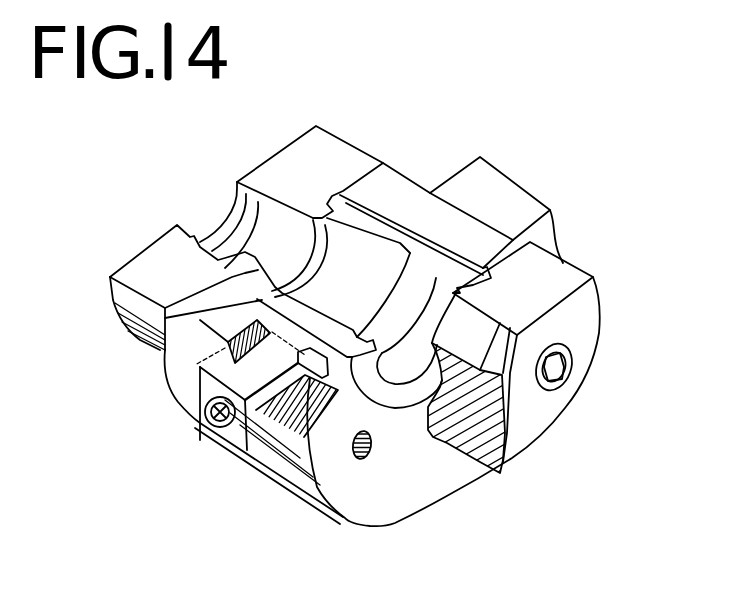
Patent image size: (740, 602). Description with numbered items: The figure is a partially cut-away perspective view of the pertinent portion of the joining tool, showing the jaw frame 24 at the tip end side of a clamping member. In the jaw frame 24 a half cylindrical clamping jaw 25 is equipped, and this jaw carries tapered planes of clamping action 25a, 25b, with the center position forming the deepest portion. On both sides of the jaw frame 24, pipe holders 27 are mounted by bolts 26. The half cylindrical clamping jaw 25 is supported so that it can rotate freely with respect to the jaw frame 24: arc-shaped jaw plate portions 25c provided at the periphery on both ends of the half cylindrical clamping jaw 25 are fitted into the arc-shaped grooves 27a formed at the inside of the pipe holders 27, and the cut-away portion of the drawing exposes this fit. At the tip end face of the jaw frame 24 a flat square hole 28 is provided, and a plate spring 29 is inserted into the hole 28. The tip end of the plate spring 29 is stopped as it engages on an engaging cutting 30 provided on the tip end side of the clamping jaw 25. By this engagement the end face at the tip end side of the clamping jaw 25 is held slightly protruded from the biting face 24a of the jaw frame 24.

The jaw frame 24 is at (400, 507).
The biting face 24a is at (210, 308).
The half cylindrical clamping jaw 25 is at (348, 218).
The tapered plane of clamping action 25a is at (367, 257).
The tapered plane of clamping action 25b is at (420, 262).
The arc-shaped jaw plate portion 25c is at (333, 218).
The bolt 26 is at (573, 357).
The pipe holder 27 is at (143, 263).
The arc-shaped groove 27a is at (312, 217).
The flat square hole 28 is at (245, 420).
The plate spring 29 is at (240, 378).
The engaging cutting 30 is at (293, 410).